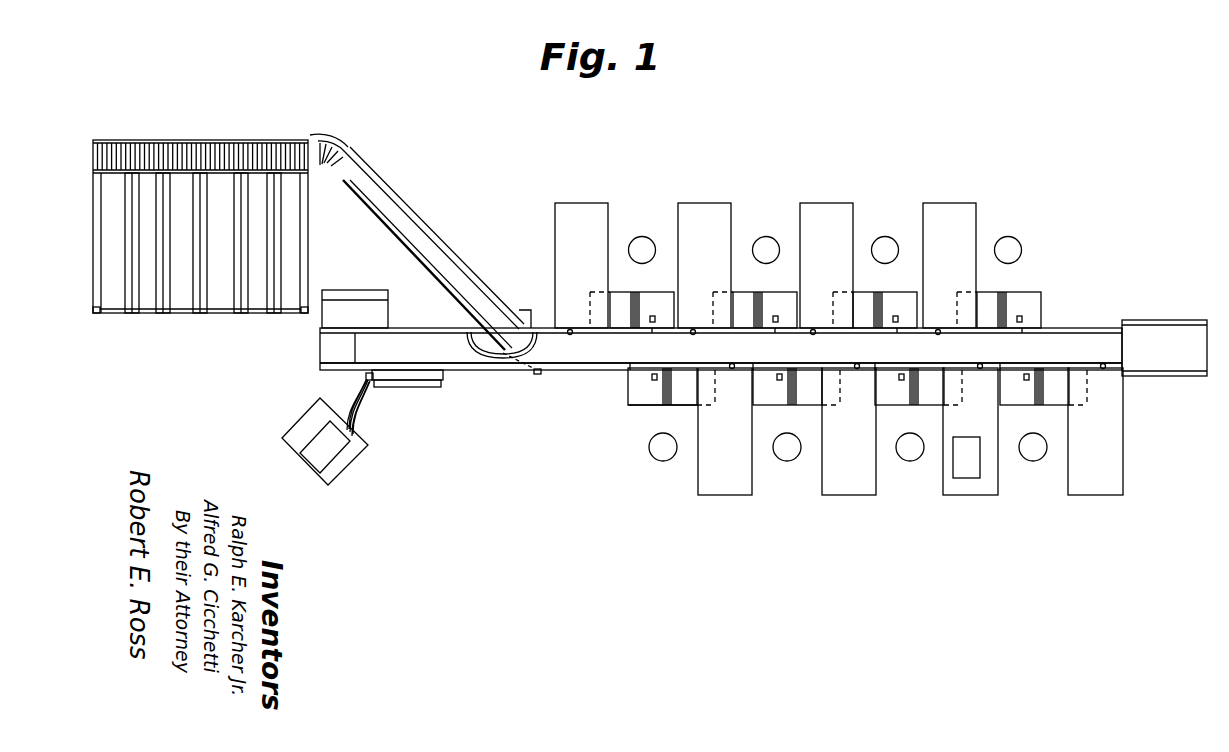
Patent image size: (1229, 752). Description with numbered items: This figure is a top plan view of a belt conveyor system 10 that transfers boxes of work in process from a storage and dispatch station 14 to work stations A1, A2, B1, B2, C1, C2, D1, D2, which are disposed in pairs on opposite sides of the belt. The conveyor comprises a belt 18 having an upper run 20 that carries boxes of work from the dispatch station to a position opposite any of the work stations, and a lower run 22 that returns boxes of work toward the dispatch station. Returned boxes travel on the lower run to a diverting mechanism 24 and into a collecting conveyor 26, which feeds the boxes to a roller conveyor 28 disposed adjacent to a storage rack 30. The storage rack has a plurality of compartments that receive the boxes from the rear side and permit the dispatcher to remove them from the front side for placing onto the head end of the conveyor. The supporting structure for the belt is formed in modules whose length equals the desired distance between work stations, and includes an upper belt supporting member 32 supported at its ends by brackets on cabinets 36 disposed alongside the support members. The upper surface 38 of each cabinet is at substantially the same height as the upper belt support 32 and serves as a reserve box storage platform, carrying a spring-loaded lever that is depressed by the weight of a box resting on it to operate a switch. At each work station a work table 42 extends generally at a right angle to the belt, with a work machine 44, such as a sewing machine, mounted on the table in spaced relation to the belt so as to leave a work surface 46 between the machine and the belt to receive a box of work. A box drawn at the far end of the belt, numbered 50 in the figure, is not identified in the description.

The belt conveyor system 10 is at (421, 481).
The storage and dispatch station 14 is at (200, 229).
The belt 18 is at (593, 363).
The upper run 20 is at (565, 358).
The lower run 22 is at (503, 337).
The diverting mechanism 24 is at (483, 347).
The collecting conveyor 26 is at (397, 200).
The roller conveyor 28 is at (274, 150).
The storage rack 30 is at (140, 315).
The upper belt supporting member 32 is at (533, 375).
The cabinet 36 is at (628, 395).
The upper surface 38 is at (643, 400).
The work table 42 is at (716, 487).
The work machine 44 is at (968, 477).
The work surface 46 is at (740, 393).
The end box 50 is at (1170, 365).
The work station A1 is at (646, 414).
The work station A2 is at (614, 265).
The work station B1 is at (808, 431).
The work station B2 is at (737, 265).
The work station C1 is at (936, 446).
The work station C2 is at (858, 265).
The work station D1 is at (1061, 431).
The work station D2 is at (987, 265).